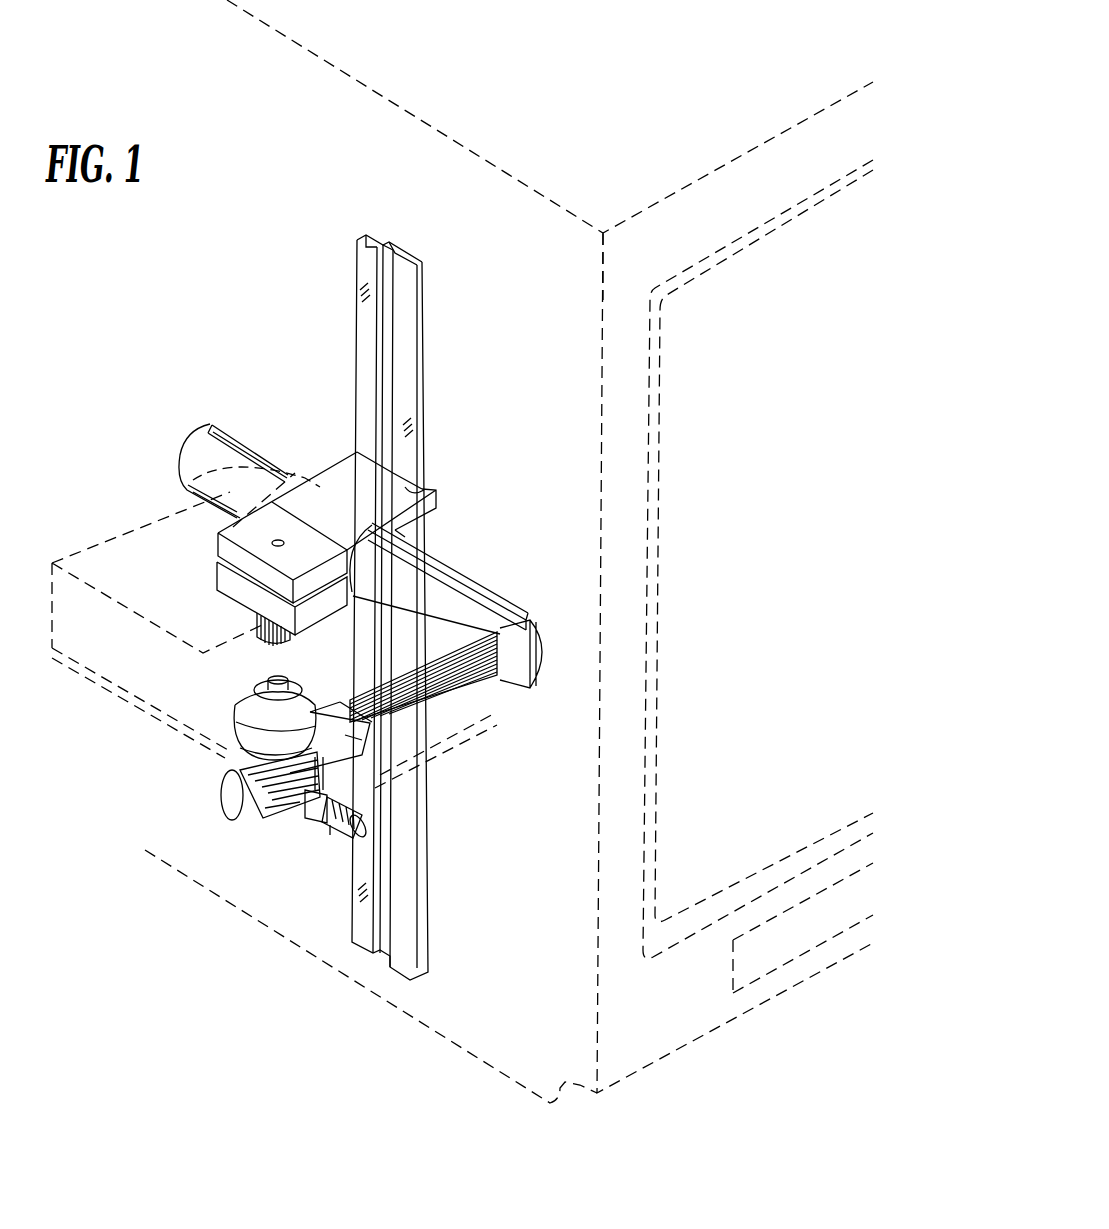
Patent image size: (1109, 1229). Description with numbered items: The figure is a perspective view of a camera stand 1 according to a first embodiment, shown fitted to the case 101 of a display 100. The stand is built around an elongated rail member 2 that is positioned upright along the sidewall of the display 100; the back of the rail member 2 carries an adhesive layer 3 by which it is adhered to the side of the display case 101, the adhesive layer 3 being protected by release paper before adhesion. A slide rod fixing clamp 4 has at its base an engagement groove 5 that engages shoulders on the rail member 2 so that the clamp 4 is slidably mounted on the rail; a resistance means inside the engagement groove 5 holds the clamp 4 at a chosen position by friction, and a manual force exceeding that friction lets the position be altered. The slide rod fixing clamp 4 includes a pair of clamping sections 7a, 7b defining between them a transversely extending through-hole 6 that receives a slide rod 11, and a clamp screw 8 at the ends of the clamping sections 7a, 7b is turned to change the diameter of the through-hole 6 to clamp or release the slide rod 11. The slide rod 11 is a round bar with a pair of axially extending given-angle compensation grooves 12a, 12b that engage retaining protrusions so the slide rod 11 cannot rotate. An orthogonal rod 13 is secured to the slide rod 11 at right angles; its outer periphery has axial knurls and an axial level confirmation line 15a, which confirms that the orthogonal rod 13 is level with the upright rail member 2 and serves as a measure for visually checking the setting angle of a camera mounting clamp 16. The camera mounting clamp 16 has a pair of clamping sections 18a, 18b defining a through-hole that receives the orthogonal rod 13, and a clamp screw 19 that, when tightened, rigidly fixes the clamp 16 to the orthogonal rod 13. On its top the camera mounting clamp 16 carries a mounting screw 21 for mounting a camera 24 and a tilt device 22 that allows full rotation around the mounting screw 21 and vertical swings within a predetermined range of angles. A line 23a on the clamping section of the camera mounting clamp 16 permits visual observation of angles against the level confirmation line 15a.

The camera stand 1 is at (288, 238).
The rail member 2 is at (405, 369).
The adhesive layer 3 is at (412, 250).
The slide rod fixing clamp 4 is at (335, 478).
The engagement groove 5 is at (425, 490).
The through-hole 6 is at (410, 525).
The clamping section 7a is at (232, 524).
The clamping section 7b is at (225, 578).
The clamp screw 8 is at (257, 625).
The slide rod 11 is at (203, 462).
The given-angle compensation groove 12a is at (477, 588).
The given-angle compensation groove 12b is at (528, 690).
The orthogonal rod 13 is at (457, 678).
The level confirmation line 15a is at (350, 752).
The camera mounting clamp 16 is at (350, 768).
The clamping section 18a is at (316, 835).
The clamping section 18b is at (293, 813).
The clamp screw 19 is at (333, 835).
The mounting screw 21 is at (260, 668).
The tilt device 22 is at (257, 723).
The line 23a is at (348, 792).
The camera 24 is at (98, 540).
The display 100 is at (783, 248).
The case 101 is at (495, 250).